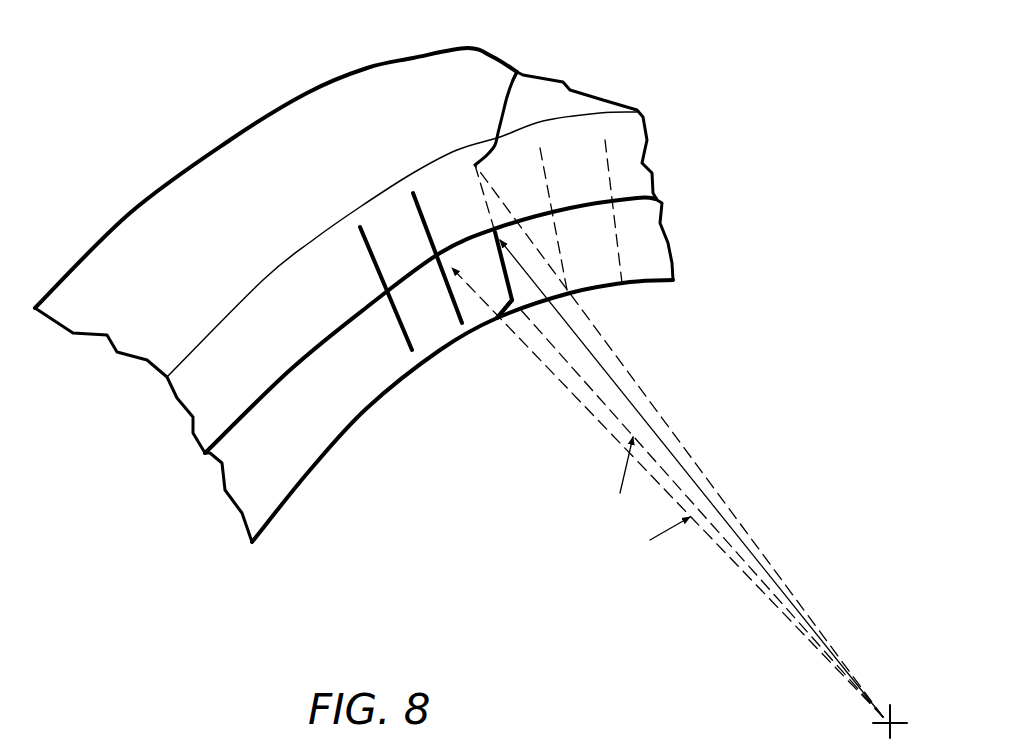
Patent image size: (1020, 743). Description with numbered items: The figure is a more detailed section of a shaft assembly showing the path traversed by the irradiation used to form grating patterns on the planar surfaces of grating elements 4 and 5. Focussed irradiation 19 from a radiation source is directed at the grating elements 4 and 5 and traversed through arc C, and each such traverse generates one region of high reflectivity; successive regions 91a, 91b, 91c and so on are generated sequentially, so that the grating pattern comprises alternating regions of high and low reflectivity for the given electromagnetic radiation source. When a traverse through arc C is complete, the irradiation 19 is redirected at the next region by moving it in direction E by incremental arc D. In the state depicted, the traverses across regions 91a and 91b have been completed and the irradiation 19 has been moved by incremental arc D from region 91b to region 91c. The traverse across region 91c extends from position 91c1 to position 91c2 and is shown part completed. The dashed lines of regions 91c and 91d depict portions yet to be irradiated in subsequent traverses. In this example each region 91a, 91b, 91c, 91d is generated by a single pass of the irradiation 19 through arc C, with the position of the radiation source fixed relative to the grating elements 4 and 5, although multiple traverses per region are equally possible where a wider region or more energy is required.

The grating element 4 is at (252, 495).
The grating element 5 is at (197, 390).
The focussed irradiation 19 is at (762, 558).
The region of high reflectivity 91a is at (362, 268).
The region of high reflectivity 91b is at (628, 436).
The region of high reflectivity 91c is at (665, 394).
The start position of traverse across region 91c 91c1 is at (497, 318).
The end position of traverse across region 91c 91c2 is at (517, 72).
The region of high reflectivity 91d is at (569, 195).
The arc C is at (665, 358).
The incremental arc D is at (713, 502).
The direction E is at (767, 663).